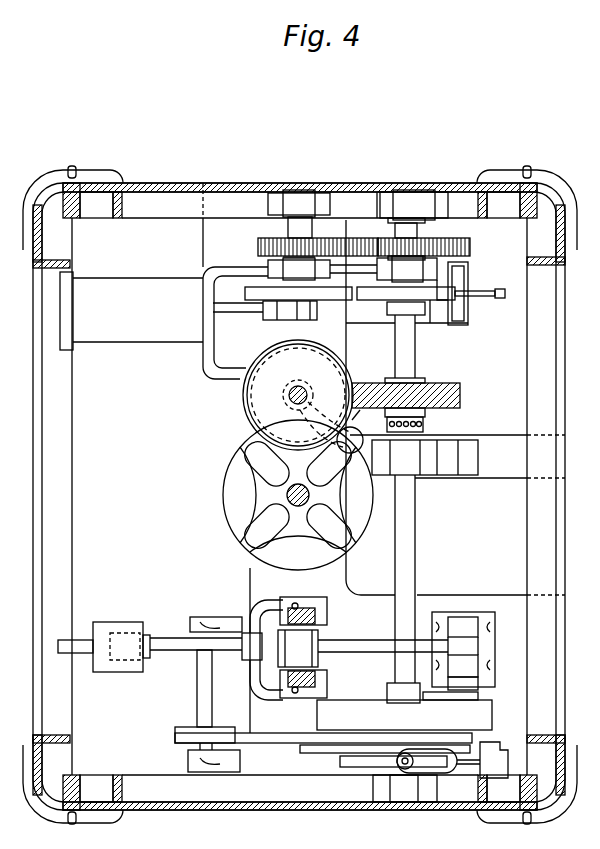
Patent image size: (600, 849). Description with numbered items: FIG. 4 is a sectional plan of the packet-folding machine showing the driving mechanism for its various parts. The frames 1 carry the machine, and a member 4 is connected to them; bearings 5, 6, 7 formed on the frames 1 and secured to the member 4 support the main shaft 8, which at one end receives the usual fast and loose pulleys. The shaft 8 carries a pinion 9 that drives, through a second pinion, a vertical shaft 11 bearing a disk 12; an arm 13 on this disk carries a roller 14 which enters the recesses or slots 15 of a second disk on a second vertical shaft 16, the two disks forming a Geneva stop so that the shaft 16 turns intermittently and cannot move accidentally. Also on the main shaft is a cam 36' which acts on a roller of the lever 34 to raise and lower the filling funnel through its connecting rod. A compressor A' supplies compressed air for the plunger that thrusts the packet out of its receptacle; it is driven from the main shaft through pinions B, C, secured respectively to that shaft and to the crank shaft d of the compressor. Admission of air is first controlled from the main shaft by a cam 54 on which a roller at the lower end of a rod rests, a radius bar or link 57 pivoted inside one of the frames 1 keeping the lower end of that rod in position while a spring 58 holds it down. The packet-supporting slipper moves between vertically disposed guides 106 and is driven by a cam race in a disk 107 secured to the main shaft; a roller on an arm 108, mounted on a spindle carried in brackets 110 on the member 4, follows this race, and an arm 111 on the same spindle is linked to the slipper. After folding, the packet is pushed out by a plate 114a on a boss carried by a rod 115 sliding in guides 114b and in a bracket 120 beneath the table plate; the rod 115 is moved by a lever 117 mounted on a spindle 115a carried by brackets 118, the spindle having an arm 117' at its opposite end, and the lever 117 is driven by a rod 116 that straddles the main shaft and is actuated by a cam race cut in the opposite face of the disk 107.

The frames 1 is at (300, 495).
The member 4 is at (388, 407).
The bearing 5 is at (350, 252).
The bearing 6 is at (405, 788).
The bearing 7 is at (425, 457).
The shaft 8 is at (413, 575).
The pinion 9 is at (461, 395).
The vertical shaft 11 is at (292, 398).
The disk 12 is at (325, 424).
The arm 13 is at (366, 418).
The roller 14 is at (350, 440).
The recesses or slots 15 is at (297, 494).
The second vertical shaft 16 is at (288, 495).
The lever 34 is at (480, 303).
The cam 36' is at (449, 308).
The cam 54 is at (355, 768).
The radius bar or link 57 is at (483, 752).
The spring 58 is at (402, 767).
The vertically disposed guides 106 is at (327, 622).
The disk 107 is at (404, 715).
The arm 108 is at (438, 702).
The brackets 110 is at (459, 656).
The arm 111 is at (355, 653).
The plate 114a is at (277, 647).
The guides 114b is at (256, 604).
The rod 115 is at (160, 640).
The spindle 115a is at (203, 678).
The rod 116 is at (273, 650).
The lever 117 is at (303, 737).
The arm 117' is at (180, 688).
The brackets 118 is at (203, 622).
The bracket 120 is at (98, 622).
The compressor A' is at (131, 311).
The pinion B is at (434, 247).
The pinion C is at (258, 247).
The crank shaft d is at (299, 235).